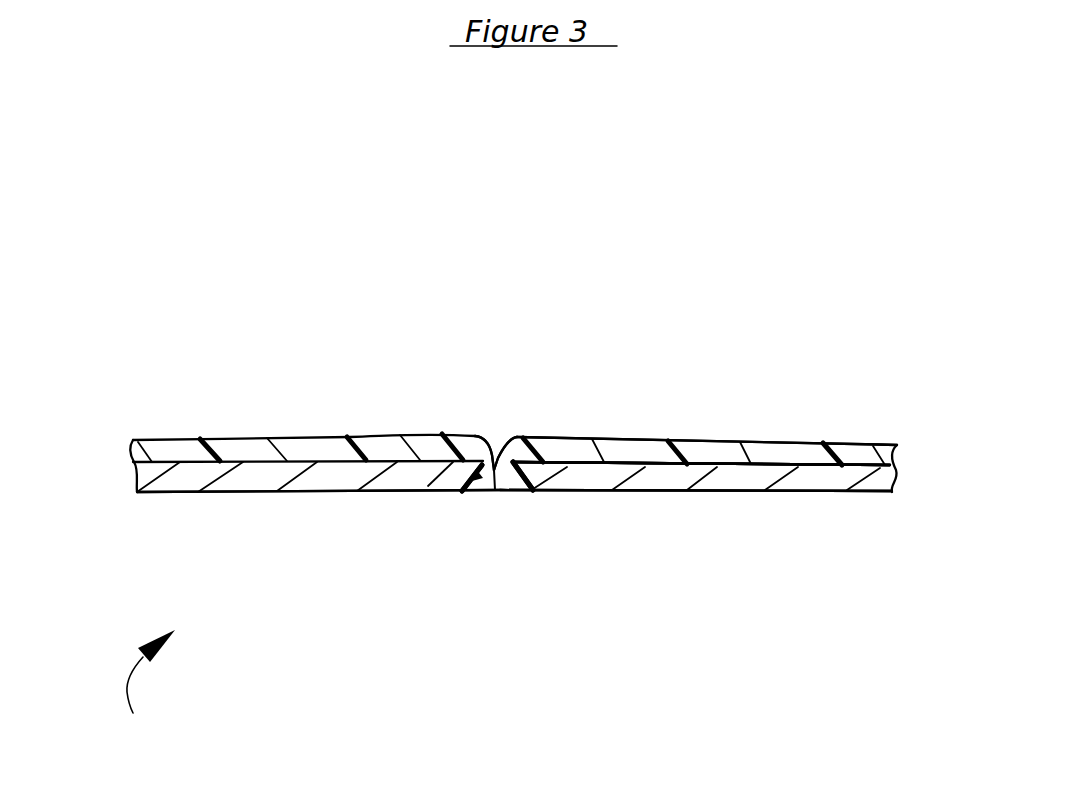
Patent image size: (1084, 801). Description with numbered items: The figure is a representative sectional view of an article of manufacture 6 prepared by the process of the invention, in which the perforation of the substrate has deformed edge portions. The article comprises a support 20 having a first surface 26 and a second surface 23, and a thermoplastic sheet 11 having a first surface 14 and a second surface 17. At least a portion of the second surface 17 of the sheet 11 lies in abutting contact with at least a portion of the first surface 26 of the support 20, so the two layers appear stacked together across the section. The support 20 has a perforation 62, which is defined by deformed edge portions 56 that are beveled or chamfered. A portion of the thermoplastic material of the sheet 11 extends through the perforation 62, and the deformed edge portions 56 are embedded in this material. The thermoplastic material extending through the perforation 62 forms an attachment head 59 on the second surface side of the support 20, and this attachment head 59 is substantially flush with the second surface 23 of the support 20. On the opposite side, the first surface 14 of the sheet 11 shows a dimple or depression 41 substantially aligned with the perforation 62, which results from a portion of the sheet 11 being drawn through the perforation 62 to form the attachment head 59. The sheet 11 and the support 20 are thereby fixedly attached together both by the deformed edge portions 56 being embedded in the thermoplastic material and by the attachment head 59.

The article of manufacture 6 is at (151, 688).
The thermoplastic sheet 11 is at (867, 452).
The first surface 14 is at (716, 441).
The second surface 17 is at (647, 461).
The support 20 is at (158, 487).
The second surface 23 is at (678, 478).
The first surface 26 is at (747, 467).
The dimple 41 is at (495, 434).
The deformed edge portions 56 is at (480, 477).
The attachment head 59 is at (490, 472).
The perforation 62 is at (495, 490).